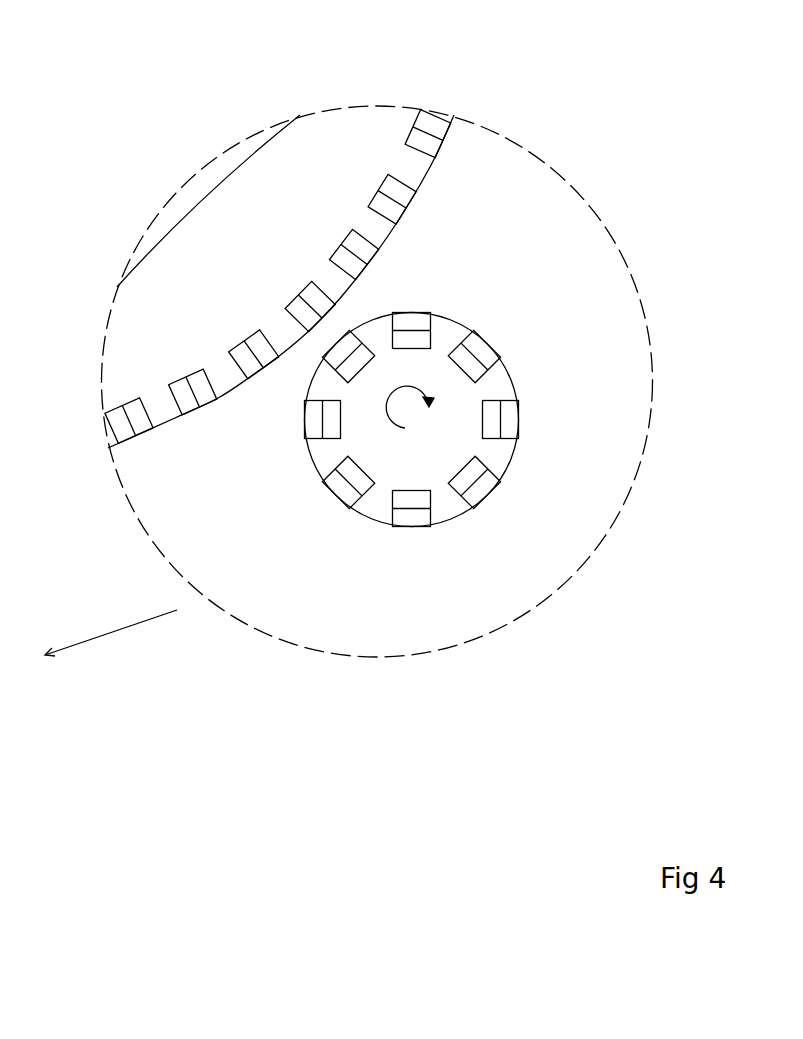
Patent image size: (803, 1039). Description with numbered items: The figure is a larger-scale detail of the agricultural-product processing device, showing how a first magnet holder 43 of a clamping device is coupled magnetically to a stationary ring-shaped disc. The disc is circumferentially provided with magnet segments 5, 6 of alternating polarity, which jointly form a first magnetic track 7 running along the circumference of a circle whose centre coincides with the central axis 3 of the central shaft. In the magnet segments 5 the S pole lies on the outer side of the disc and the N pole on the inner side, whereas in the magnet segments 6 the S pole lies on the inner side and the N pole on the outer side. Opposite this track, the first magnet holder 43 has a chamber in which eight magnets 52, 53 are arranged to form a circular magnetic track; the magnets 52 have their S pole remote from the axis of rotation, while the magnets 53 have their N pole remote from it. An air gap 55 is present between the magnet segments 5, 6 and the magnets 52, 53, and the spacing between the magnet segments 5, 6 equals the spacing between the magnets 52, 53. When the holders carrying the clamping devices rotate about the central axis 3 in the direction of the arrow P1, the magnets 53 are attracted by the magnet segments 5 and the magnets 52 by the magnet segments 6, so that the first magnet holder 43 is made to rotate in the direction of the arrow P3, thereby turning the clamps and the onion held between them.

The central axis 3 is at (256, 233).
The magnet segment 5 is at (340, 247).
The magnet segment 6 is at (412, 214).
The first magnetic track 7 is at (95, 450).
The first magnet holder 43 is at (408, 453).
The magnet 52 is at (493, 347).
The magnet 53 is at (518, 403).
The air gap 55 is at (317, 335).
The direction of rotation of the holders P1 is at (97, 638).
The direction of rotation of the first magnet holders P3 is at (428, 396).